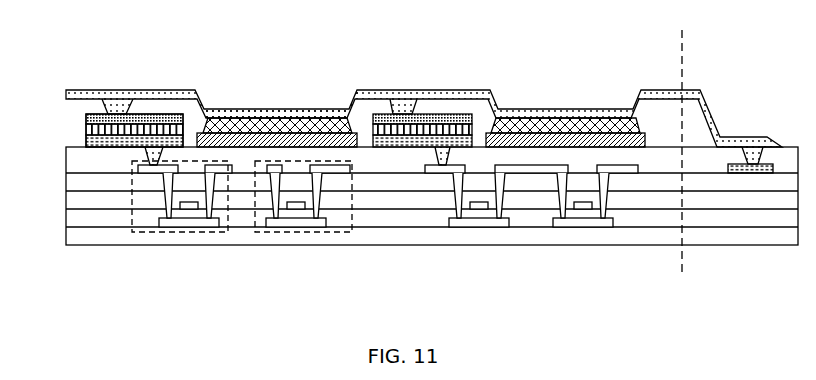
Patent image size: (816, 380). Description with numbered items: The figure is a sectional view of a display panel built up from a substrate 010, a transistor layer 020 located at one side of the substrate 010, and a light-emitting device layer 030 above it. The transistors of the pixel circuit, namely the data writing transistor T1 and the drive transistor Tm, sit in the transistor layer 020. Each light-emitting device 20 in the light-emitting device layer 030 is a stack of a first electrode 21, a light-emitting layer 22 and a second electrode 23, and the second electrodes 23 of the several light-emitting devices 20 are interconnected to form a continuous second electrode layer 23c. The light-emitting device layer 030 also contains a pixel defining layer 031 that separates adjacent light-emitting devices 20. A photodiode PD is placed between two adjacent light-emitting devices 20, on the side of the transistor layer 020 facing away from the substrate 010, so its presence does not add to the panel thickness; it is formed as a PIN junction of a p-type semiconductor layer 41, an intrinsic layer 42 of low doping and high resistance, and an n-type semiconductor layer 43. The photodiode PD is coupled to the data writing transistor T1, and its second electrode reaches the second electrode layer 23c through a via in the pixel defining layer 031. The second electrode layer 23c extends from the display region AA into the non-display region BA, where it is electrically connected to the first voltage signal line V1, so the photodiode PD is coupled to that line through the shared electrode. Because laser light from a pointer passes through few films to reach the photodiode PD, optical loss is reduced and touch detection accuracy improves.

The substrate 010 is at (401, 233).
The transistor layer 020 is at (66, 148).
The light-emitting device layer 030 is at (56, 92).
The pixel defining layer 031 is at (365, 120).
The light-emitting device 20 is at (277, 90).
The first electrode 21 is at (300, 143).
The light-emitting layer 22 is at (268, 130).
The second electrode 23 is at (318, 64).
The second electrode layer 23c is at (438, 95).
The p-type semiconductor layer 41 is at (99, 117).
The intrinsic layer 42 is at (125, 130).
The n-type semiconductor layer 43 is at (158, 146).
The photodiode PD is at (90, 47).
The data writing transistor T1 is at (177, 234).
The drive transistor Tm is at (297, 233).
The first voltage signal line V1 is at (767, 170).
The display region AA is at (661, 152).
The non-display region BA is at (707, 137).